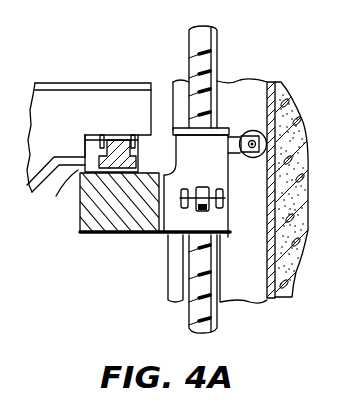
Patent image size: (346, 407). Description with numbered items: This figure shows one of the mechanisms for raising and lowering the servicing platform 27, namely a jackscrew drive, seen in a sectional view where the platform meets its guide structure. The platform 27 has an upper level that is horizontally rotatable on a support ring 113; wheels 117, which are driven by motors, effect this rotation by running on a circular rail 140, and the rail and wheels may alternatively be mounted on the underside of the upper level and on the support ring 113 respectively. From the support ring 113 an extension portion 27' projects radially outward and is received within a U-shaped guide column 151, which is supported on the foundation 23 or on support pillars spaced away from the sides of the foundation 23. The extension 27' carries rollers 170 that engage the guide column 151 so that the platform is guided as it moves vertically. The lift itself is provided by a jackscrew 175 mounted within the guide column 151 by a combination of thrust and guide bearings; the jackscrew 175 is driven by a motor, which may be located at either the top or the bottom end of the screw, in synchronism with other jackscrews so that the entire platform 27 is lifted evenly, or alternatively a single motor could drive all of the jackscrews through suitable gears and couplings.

The platform 27 is at (86, 109).
The wheels 117 is at (83, 143).
The circular rail 140 is at (50, 196).
The support ring 113 is at (72, 233).
The extension portion 27' is at (155, 267).
The jackscrew 175 is at (218, 57).
The guide column 151 is at (242, 97).
The rollers 170 is at (262, 122).
The foundation 23 is at (307, 227).